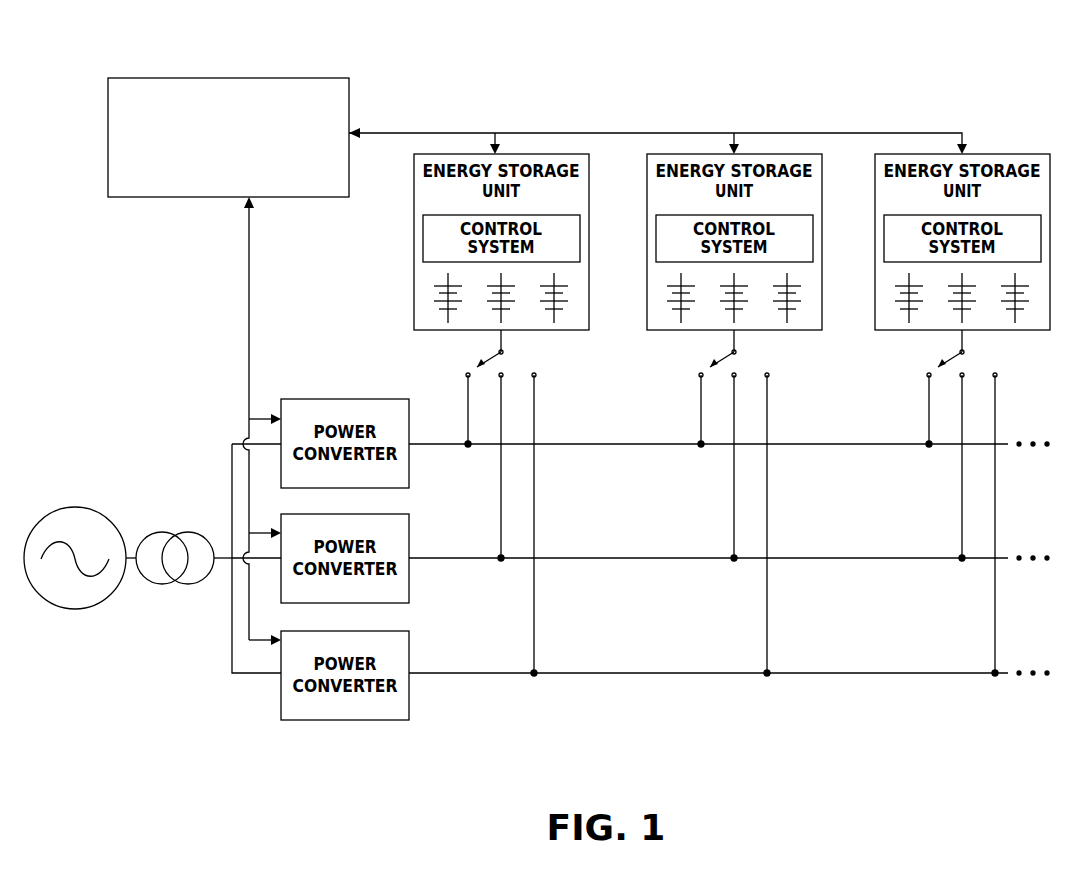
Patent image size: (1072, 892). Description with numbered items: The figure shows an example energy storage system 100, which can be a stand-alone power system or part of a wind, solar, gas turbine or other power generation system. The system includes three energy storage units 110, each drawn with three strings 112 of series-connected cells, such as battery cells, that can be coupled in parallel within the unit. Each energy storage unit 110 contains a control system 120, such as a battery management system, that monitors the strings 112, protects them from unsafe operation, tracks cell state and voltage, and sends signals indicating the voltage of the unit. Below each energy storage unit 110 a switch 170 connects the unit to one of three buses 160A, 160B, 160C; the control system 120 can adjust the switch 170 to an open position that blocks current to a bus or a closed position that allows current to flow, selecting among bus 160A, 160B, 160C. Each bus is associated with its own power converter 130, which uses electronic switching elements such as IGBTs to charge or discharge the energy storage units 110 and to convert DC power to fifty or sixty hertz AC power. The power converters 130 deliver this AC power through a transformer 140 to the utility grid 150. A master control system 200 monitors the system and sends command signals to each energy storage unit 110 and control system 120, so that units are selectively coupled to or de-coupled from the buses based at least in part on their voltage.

The energy storage system 100 is at (254, 32).
The master control system 200 is at (305, 78).
The energy storage unit 110 is at (499, 242).
The control system 120 is at (589, 245).
The string 112 is at (448, 320).
The switch 170 is at (486, 360).
The power converter 130 is at (310, 399).
The bus 160A is at (463, 446).
The bus 160B is at (497, 560).
The bus 160C is at (538, 672).
The utility grid 150 is at (75, 507).
The transformer 140 is at (163, 532).